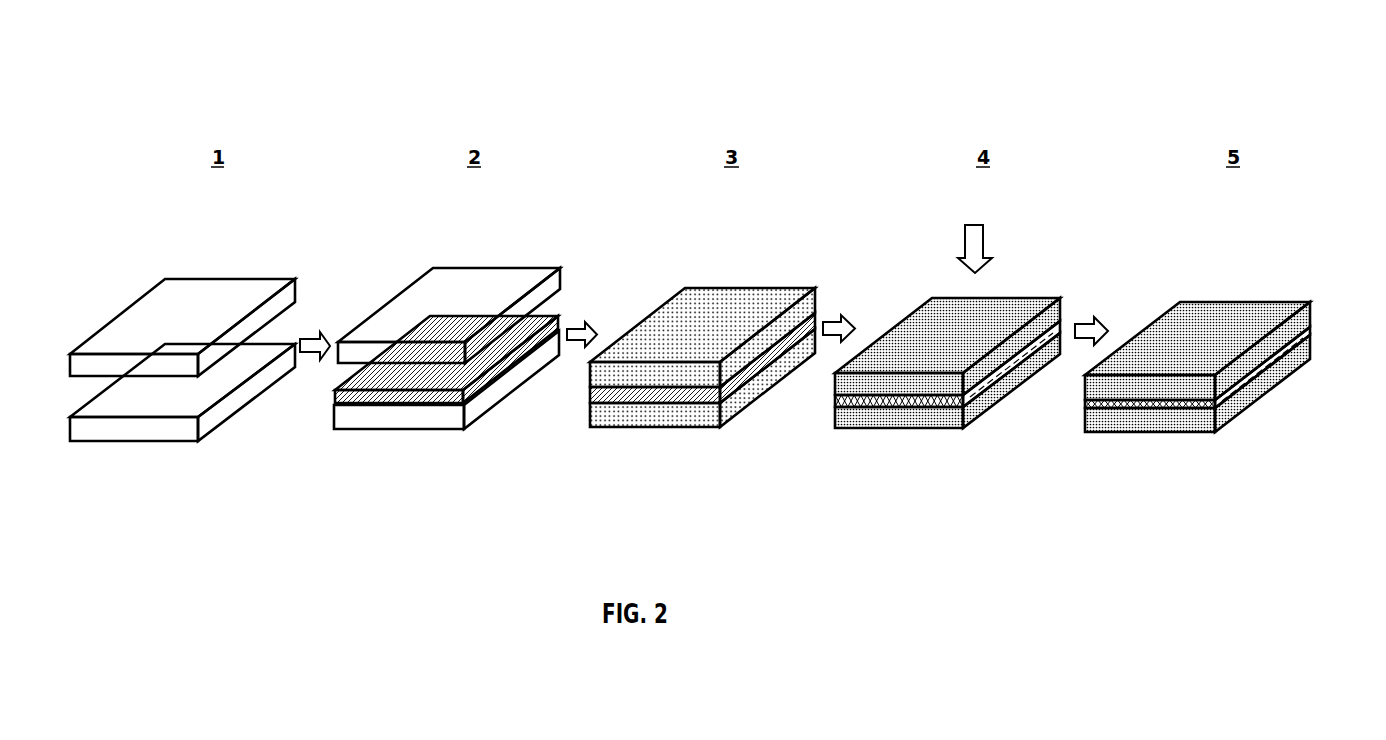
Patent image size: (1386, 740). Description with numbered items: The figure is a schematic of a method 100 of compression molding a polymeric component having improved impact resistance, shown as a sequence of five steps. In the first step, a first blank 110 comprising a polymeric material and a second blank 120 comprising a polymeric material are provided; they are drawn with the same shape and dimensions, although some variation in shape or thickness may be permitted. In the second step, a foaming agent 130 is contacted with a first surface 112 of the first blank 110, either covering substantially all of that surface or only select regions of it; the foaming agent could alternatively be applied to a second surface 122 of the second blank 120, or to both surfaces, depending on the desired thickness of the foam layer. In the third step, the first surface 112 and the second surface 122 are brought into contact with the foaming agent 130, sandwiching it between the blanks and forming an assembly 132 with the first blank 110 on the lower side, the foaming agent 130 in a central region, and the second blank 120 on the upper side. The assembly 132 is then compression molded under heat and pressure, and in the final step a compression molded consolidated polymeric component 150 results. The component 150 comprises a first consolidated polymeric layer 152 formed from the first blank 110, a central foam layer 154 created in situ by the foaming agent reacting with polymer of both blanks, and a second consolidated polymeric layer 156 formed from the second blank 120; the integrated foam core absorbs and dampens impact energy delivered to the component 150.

The method 100 is at (208, 100).
The first blank 110 is at (442, 424).
The first surface 112 is at (168, 400).
The second blank 120 is at (442, 356).
The second surface 122 is at (283, 318).
The foaming agent 130 is at (483, 395).
The assembly 132 is at (743, 335).
The compression molded consolidated polymeric component 150 is at (1097, 321).
The first consolidated polymeric layer 152 is at (1317, 340).
The central foam layer 154 is at (1317, 323).
The second consolidated polymeric layer 156 is at (1317, 300).